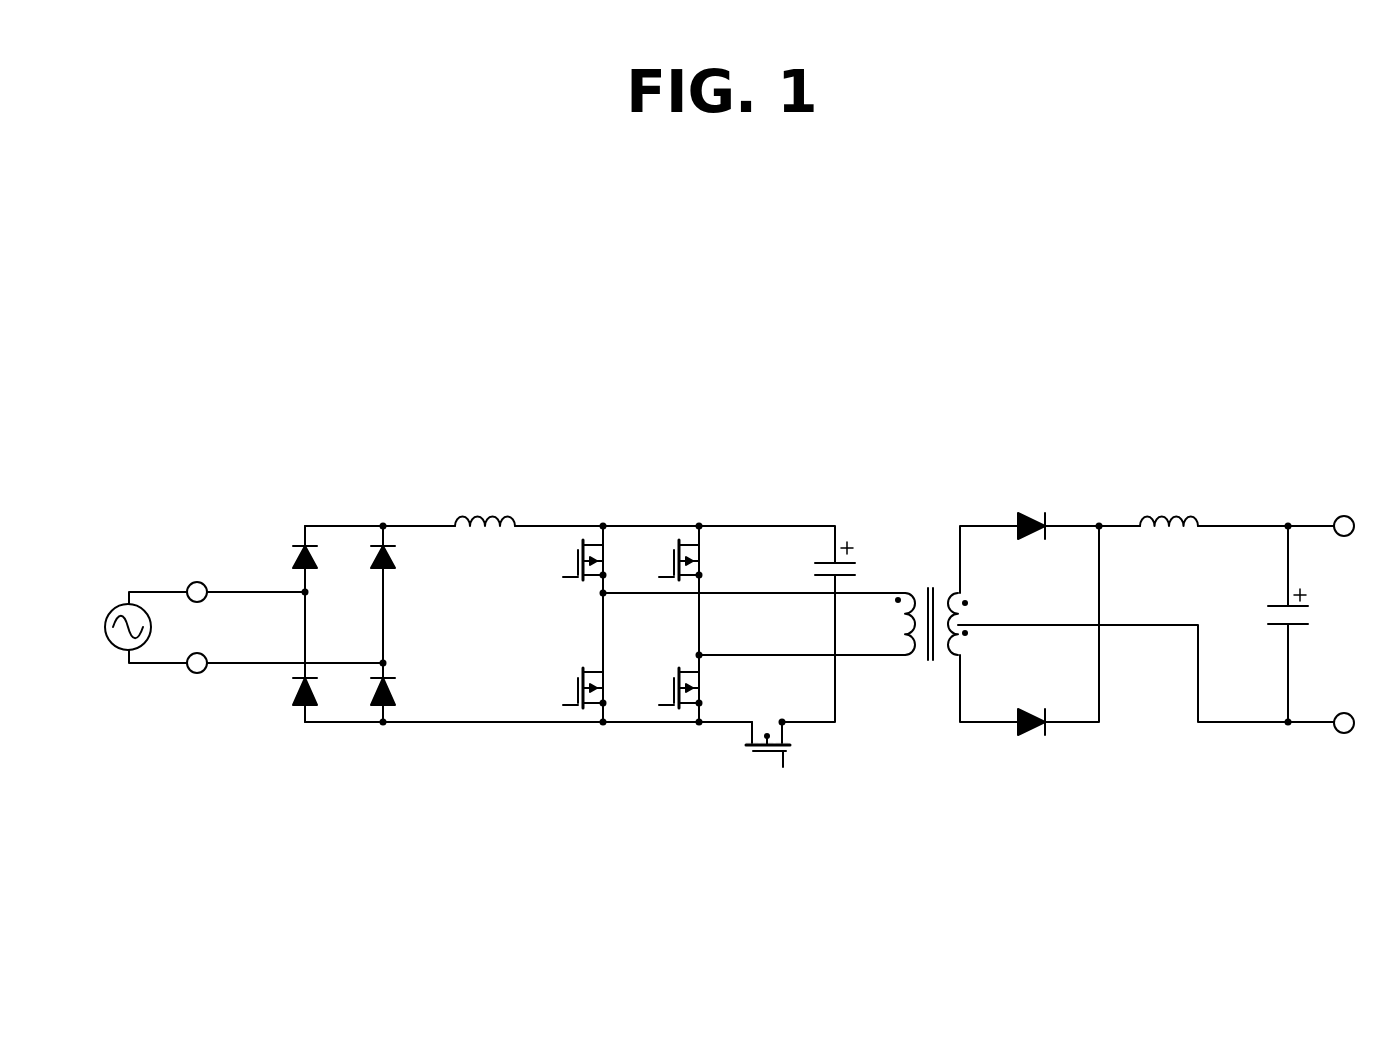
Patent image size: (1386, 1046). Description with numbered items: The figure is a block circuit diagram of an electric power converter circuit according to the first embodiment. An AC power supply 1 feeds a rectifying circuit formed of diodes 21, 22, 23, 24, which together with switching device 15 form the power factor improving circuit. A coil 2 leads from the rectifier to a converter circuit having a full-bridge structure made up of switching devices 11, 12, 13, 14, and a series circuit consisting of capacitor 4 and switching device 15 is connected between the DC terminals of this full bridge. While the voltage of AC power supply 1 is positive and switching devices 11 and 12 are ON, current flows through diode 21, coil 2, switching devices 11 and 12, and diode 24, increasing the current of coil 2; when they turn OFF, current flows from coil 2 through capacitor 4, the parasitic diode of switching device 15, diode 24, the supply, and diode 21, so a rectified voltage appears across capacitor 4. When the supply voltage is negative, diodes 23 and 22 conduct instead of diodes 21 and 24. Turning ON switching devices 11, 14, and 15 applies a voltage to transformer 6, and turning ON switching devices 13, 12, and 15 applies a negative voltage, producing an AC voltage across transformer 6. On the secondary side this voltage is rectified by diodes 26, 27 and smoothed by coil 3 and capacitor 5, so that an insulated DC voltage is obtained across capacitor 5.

The AC power supply 1 is at (93, 615).
The coil 2 is at (482, 500).
The coil 3 is at (1167, 500).
The capacitor 4 is at (797, 568).
The capacitor 5 is at (1316, 615).
The transformer 6 is at (908, 570).
The switching device 11 is at (573, 556).
The switching device 12 is at (556, 684).
The switching device 13 is at (676, 556).
The switching device 14 is at (654, 684).
The switching device 15 is at (800, 748).
The diode 21 is at (284, 556).
The diode 22 is at (284, 685).
The diode 23 is at (368, 556).
The diode 24 is at (366, 685).
The diode 26 is at (1035, 512).
The diode 27 is at (1033, 750).